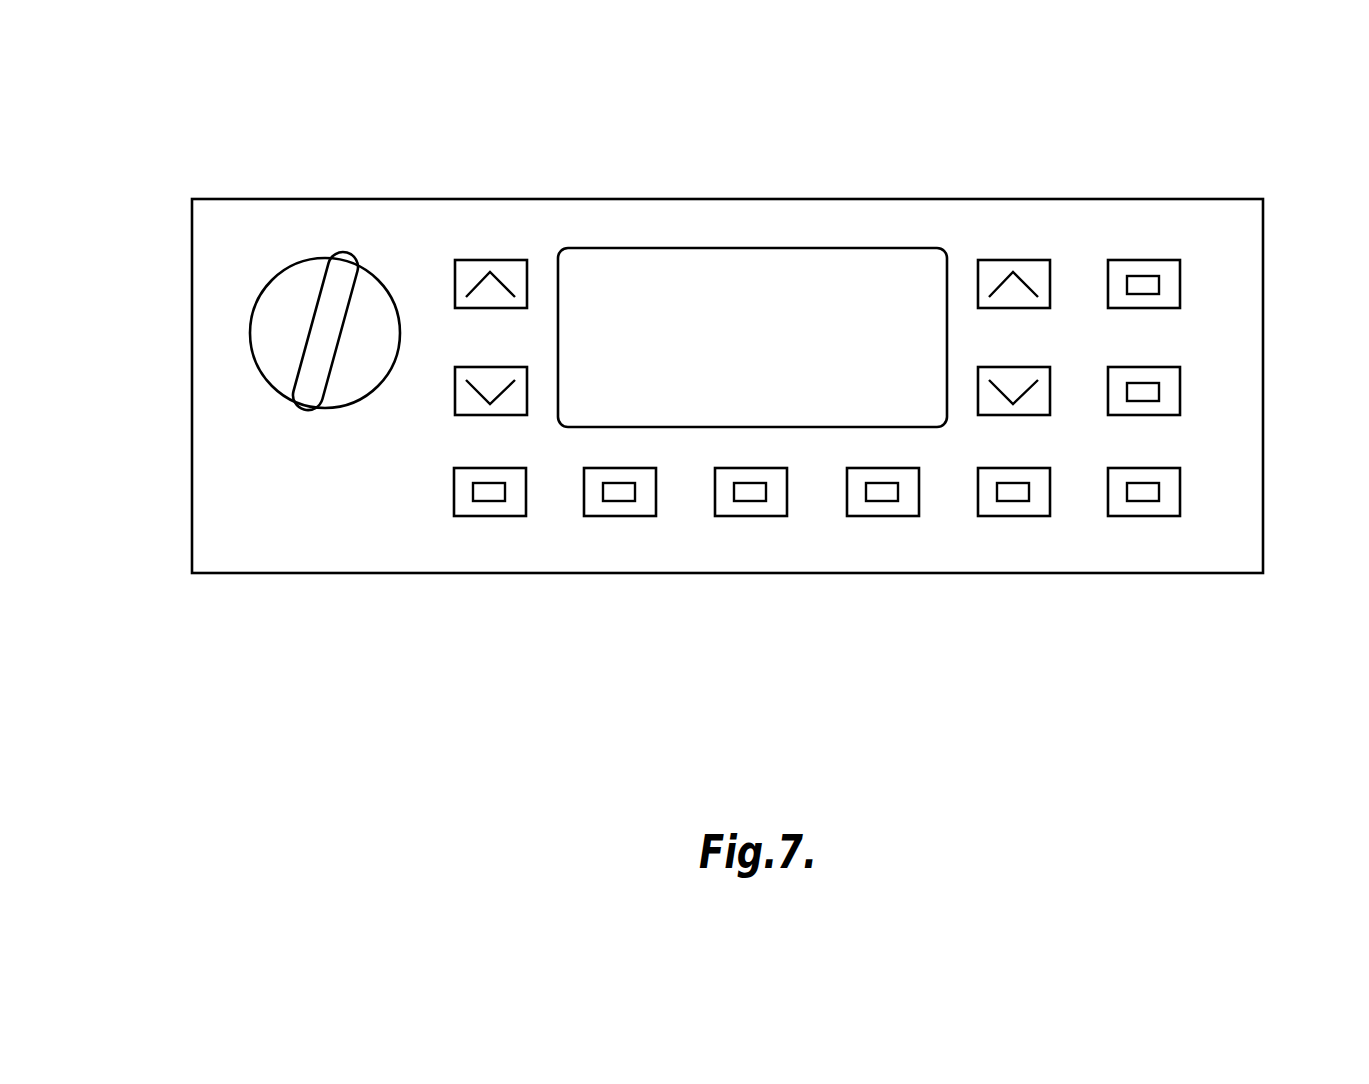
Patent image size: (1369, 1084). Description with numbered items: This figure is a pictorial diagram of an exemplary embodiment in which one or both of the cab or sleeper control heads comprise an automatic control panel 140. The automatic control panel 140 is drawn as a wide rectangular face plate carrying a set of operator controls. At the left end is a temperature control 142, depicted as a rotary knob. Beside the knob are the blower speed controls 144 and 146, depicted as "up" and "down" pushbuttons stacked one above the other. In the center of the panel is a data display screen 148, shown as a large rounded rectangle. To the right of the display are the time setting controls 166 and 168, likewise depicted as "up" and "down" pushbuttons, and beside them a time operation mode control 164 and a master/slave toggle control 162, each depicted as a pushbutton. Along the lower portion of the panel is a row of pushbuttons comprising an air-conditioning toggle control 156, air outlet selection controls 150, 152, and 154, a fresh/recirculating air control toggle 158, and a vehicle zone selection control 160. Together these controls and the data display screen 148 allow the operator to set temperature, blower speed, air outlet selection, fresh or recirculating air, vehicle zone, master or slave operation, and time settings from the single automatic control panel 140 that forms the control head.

The automatic control panel 140 is at (297, 508).
The temperature control 142 is at (290, 310).
The blower speed control 144 is at (512, 272).
The blower speed control 146 is at (463, 397).
The data display screen 148 is at (752, 308).
The air outlet selection control 150 is at (646, 496).
The air outlet selection control 152 is at (778, 502).
The air outlet selection control 154 is at (909, 496).
The air-conditioning toggle control 156 is at (517, 498).
The fresh/recirculating air control toggle 158 is at (1038, 498).
The vehicle zone selection control 160 is at (1171, 493).
The master/slave toggle control 162 is at (1168, 398).
The time operation mode control 164 is at (1172, 279).
The time setting control 166 is at (1038, 275).
The time setting control 168 is at (1040, 395).